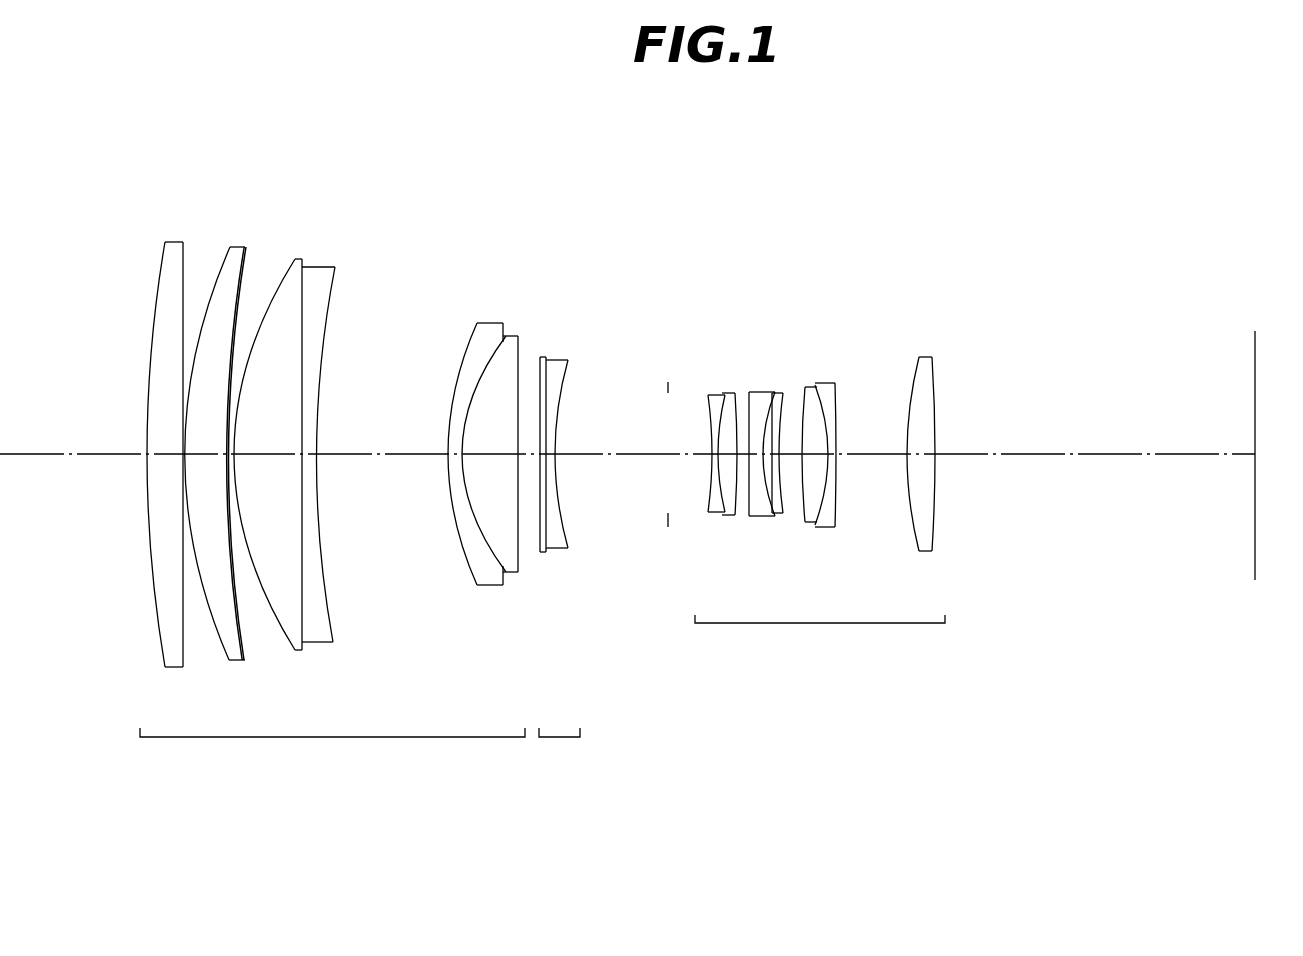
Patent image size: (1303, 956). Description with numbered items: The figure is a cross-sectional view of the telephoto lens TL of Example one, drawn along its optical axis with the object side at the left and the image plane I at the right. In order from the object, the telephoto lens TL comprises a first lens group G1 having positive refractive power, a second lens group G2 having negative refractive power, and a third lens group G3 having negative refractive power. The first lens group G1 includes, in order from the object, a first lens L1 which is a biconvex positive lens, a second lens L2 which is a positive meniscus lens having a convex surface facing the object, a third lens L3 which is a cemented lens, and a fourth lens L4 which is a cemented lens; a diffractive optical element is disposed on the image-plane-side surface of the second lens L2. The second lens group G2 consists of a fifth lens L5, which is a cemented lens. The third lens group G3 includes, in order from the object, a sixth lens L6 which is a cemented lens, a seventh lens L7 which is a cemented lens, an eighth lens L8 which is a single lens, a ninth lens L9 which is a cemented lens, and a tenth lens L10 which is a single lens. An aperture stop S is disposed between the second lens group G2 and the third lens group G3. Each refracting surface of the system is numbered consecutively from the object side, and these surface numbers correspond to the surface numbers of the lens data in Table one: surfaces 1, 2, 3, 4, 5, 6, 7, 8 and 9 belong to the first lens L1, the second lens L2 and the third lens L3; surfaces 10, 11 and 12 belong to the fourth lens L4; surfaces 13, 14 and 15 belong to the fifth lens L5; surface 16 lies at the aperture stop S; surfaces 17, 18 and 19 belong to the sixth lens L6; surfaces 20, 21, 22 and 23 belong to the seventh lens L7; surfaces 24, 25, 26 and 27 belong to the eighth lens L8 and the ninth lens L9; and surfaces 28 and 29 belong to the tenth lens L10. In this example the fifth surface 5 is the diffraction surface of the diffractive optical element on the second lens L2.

The surface 1 is at (162, 256).
The surface 2 is at (186, 242).
The surface 3 is at (222, 256).
The surface 4 is at (236, 246).
The surface 5 is at (245, 285).
The surface 6 is at (247, 296).
The surface 7 is at (290, 262).
The surface 8 is at (313, 276).
The surface 9 is at (337, 302).
The surface 10 is at (468, 345).
The surface 11 is at (492, 347).
The surface 12 is at (522, 337).
The surface 13 is at (539, 374).
The surface 14 is at (548, 363).
The surface 15 is at (568, 383).
The surface 16 is at (667, 387).
The surface 17 is at (708, 412).
The surface 18 is at (718, 393).
The surface 19 is at (737, 400).
The surface 20 is at (748, 392).
The surface 21 is at (768, 392).
The surface 22 is at (783, 393).
The surface 23 is at (781, 395).
The surface 24 is at (821, 384).
The surface 25 is at (818, 387).
The surface 26 is at (835, 397).
The surface 27 is at (837, 405).
The surface 28 is at (913, 360).
The surface 29 is at (934, 367).
The first lens L1 is at (172, 668).
The second lens L2 is at (239, 661).
The third lens L3 is at (325, 643).
The fourth lens L4 is at (512, 573).
The fifth lens L5 is at (567, 549).
The sixth lens L6 is at (730, 515).
The seventh lens L7 is at (777, 516).
The eighth lens L8 is at (808, 523).
The ninth lens L9 is at (832, 528).
The tenth lens L10 is at (927, 553).
The first lens group G1 is at (332, 750).
The second lens group G2 is at (559, 750).
The third lens group G3 is at (820, 636).
The aperture stop S is at (667, 522).
The image plane I is at (1256, 368).
The telephoto lens TL is at (1055, 191).